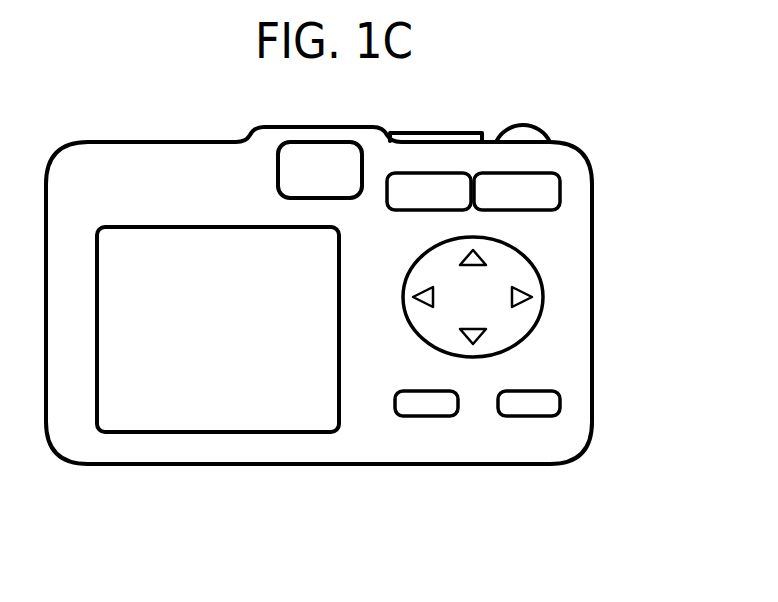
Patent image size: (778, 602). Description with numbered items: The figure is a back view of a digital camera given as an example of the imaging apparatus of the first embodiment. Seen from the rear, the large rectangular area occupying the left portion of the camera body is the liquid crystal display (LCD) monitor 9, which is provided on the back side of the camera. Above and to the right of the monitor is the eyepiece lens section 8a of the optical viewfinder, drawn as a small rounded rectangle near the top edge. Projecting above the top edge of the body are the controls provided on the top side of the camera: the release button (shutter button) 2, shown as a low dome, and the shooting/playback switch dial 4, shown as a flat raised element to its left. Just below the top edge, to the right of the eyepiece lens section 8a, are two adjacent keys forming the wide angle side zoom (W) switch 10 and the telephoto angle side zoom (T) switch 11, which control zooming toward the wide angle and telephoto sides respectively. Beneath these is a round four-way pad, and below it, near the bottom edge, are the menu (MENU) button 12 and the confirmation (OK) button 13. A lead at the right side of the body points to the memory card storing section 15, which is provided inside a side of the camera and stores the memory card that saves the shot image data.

The release button 2 is at (523, 129).
The shooting/playback switch dial 4 is at (430, 134).
The eyepiece lens section 8a is at (302, 148).
The liquid crystal display monitor 9 is at (296, 418).
The wide angle side zoom switch 10 is at (402, 185).
The telephoto angle side zoom switch 11 is at (547, 185).
The menu button 12 is at (452, 410).
The confirmation button 13 is at (555, 410).
The memory card storing section 15 is at (577, 349).